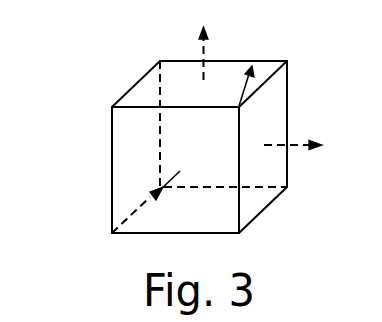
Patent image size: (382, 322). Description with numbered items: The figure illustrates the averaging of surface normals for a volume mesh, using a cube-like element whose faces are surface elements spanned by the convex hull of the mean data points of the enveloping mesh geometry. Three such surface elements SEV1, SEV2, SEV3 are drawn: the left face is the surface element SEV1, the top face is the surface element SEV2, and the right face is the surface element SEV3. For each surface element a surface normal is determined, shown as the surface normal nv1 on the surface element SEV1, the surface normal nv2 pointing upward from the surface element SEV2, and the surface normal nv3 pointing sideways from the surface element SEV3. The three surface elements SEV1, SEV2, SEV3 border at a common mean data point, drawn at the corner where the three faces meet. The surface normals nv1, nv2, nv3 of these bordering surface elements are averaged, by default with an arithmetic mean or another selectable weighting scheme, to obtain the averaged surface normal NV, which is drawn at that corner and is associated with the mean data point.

The surface element SEV1 is at (125, 154).
The surface element SEV2 is at (222, 60).
The surface element SEV3 is at (269, 203).
The surface normal nv1 is at (158, 191).
The surface normal nv2 is at (197, 55).
The surface normal nv3 is at (297, 143).
The averaged surface normal NV is at (280, 61).